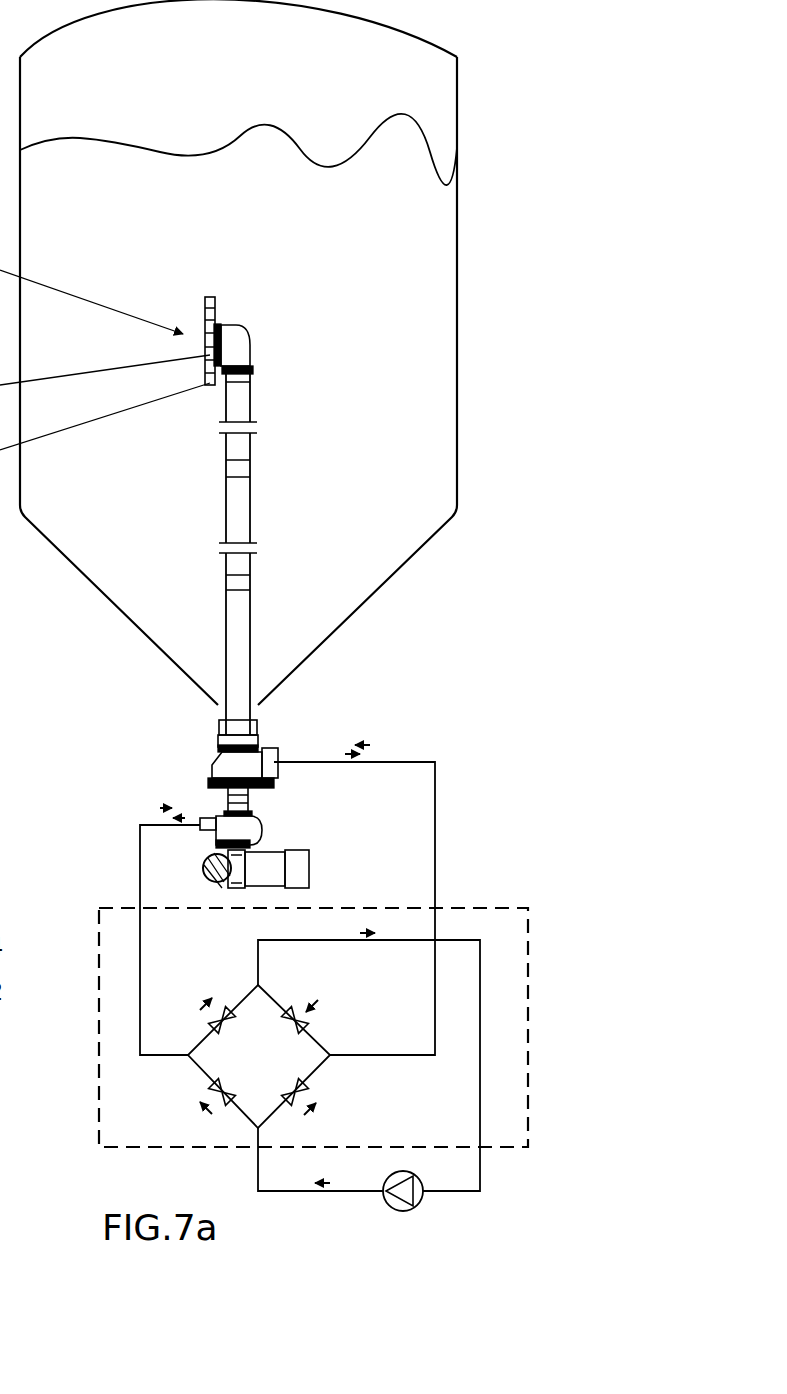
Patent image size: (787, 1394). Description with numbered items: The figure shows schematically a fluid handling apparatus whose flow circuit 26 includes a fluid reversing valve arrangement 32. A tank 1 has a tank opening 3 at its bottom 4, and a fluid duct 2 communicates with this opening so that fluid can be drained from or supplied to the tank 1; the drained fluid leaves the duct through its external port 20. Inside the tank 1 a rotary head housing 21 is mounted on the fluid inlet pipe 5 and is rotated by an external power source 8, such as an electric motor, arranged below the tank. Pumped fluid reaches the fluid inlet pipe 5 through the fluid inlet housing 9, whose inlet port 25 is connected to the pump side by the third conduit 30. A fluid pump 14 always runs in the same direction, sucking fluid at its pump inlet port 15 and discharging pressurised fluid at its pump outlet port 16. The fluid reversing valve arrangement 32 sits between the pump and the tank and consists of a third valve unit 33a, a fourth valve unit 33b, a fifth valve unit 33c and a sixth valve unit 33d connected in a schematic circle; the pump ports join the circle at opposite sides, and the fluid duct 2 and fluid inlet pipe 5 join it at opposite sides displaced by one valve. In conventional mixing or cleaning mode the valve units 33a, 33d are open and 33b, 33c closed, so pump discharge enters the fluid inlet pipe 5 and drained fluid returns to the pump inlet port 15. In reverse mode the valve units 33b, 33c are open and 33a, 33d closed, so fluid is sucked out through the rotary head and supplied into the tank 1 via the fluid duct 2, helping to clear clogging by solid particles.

The tank 1 is at (427, 258).
The fluid duct 2 is at (275, 748).
The tank opening 3 is at (219, 717).
The bottom 4 is at (218, 705).
The fluid inlet pipe 5 is at (245, 667).
The external power source 8 is at (305, 876).
The fluid inlet housing 9 is at (245, 828).
The fluid pump 14 is at (400, 1212).
The pump inlet port 15 is at (425, 1205).
The pump outlet port 16 is at (385, 1195).
The external port 20 is at (278, 770).
The rotary head housing 21 is at (250, 347).
The inlet port 25 is at (215, 828).
The flow circuit 26 is at (562, 882).
The third conduit 30 is at (145, 925).
The fluid reversing valve arrangement 32 is at (528, 1112).
The third valve unit 33a is at (290, 1017).
The fourth valve unit 33b is at (220, 1021).
The fifth valve unit 33c is at (298, 1085).
The sixth valve unit 33d is at (228, 1098).